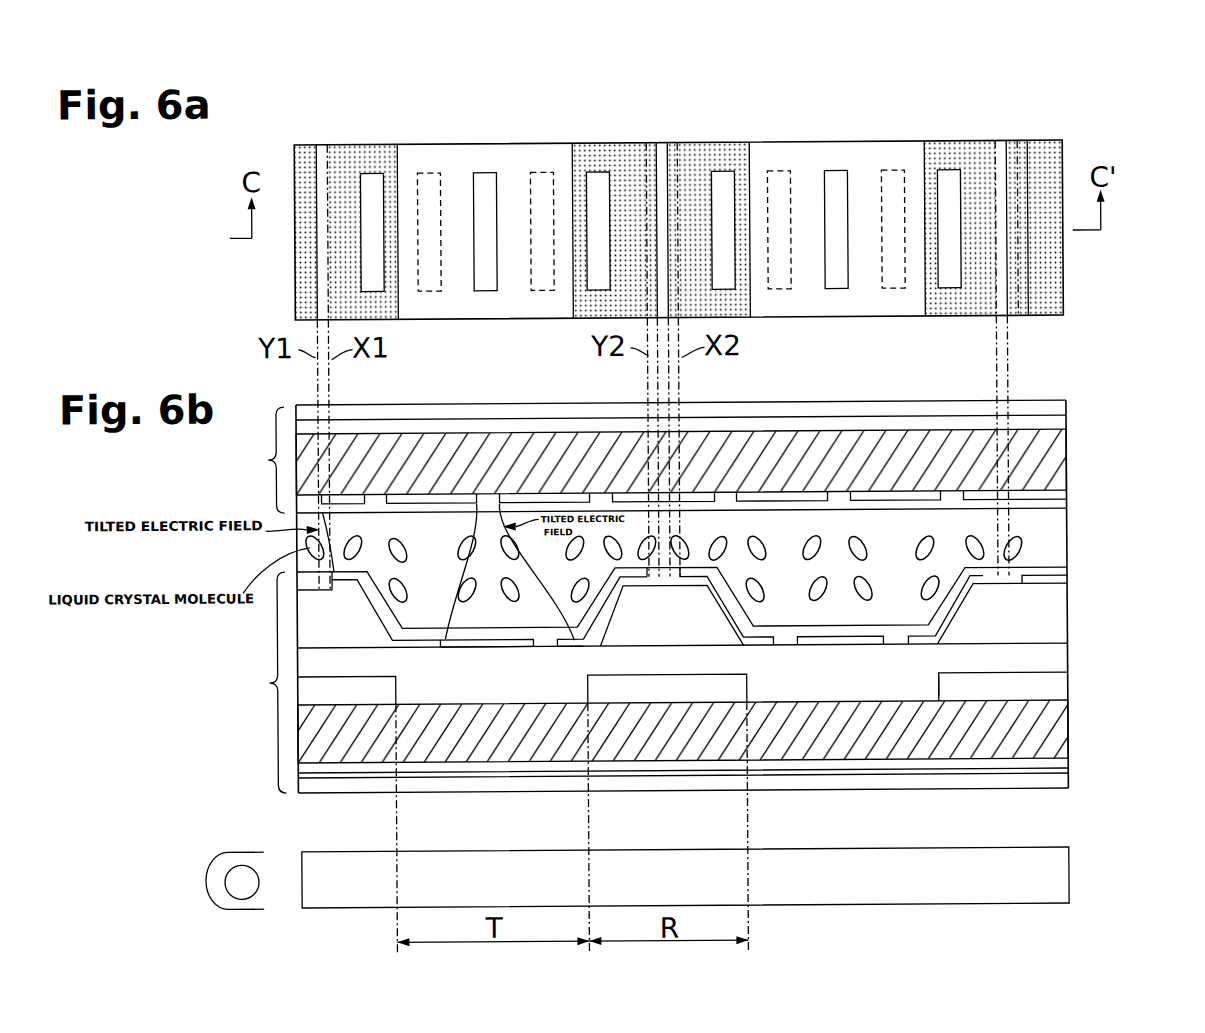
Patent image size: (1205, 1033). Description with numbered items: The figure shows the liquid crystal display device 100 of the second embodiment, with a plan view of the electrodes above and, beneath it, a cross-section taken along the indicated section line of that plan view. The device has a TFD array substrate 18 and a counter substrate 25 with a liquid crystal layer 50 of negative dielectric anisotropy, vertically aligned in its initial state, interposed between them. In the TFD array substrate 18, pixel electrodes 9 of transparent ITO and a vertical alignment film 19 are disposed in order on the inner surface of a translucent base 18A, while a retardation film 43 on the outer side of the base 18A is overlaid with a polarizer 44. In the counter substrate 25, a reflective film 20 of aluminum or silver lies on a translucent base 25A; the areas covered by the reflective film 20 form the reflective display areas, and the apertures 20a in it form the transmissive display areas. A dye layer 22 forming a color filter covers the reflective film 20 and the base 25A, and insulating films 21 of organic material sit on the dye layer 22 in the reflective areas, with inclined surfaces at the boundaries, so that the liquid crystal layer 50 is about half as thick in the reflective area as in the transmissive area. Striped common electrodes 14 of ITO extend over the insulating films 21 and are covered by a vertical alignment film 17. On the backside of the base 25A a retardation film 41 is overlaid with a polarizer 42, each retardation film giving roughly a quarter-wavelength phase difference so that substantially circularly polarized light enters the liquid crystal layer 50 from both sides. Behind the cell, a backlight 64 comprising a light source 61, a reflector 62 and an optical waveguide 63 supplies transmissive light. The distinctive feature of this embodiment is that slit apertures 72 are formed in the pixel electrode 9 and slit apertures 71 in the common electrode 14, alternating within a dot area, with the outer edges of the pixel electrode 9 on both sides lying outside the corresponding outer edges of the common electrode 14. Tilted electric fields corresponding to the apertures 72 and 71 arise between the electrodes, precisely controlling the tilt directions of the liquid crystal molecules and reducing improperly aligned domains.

In FIG. 6a, the reflective film 20 is at (1047, 168).
In FIG. 6b, the reflective film 20 is at (1066, 690).
In FIG. 6a, the slit apertures of the pixel electrode 72 is at (381, 187).
In FIG. 6b, the slit apertures of the pixel electrode 72 is at (379, 500).
In FIG. 6a, the slit apertures of the common electrode 71 is at (438, 187).
In FIG. 6b, the slit apertures of the common electrode 71 is at (435, 650).
In FIG. 6b, the liquid crystal display device 100 is at (1078, 352).
In FIG. 6b, the polarizer 44 is at (1064, 405).
In FIG. 6b, the retardation film 43 is at (1066, 420).
In FIG. 6b, the base 18A is at (1066, 463).
In FIG. 6b, the pixel electrodes 9 is at (1050, 499).
In FIG. 6b, the vertical alignment film 19 is at (1066, 513).
In FIG. 6b, the liquid crystal layer 50 is at (1066, 541).
In FIG. 6b, the vertical alignment film 17 is at (1055, 572).
In FIG. 6b, the common electrodes 14 is at (985, 580).
In FIG. 6b, the insulating film 21 is at (1053, 627).
In FIG. 6b, the dye layer 22 is at (1066, 662).
In FIG. 6b, the apertures 20a is at (941, 679).
In FIG. 6b, the base 25A is at (1066, 733).
In FIG. 6b, the retardation film 41 is at (1066, 775).
In FIG. 6b, the polarizer 42 is at (1066, 790).
In FIG. 6b, the TFD array substrate 18 is at (258, 460).
In FIG. 6b, the counter substrate 25 is at (260, 682).
In FIG. 6b, the optical waveguide 63 is at (1062, 898).
In FIG. 6b, the backlight 64 is at (1084, 873).
In FIG. 6b, the light source 61 is at (240, 876).
In FIG. 6b, the reflector 62 is at (205, 887).